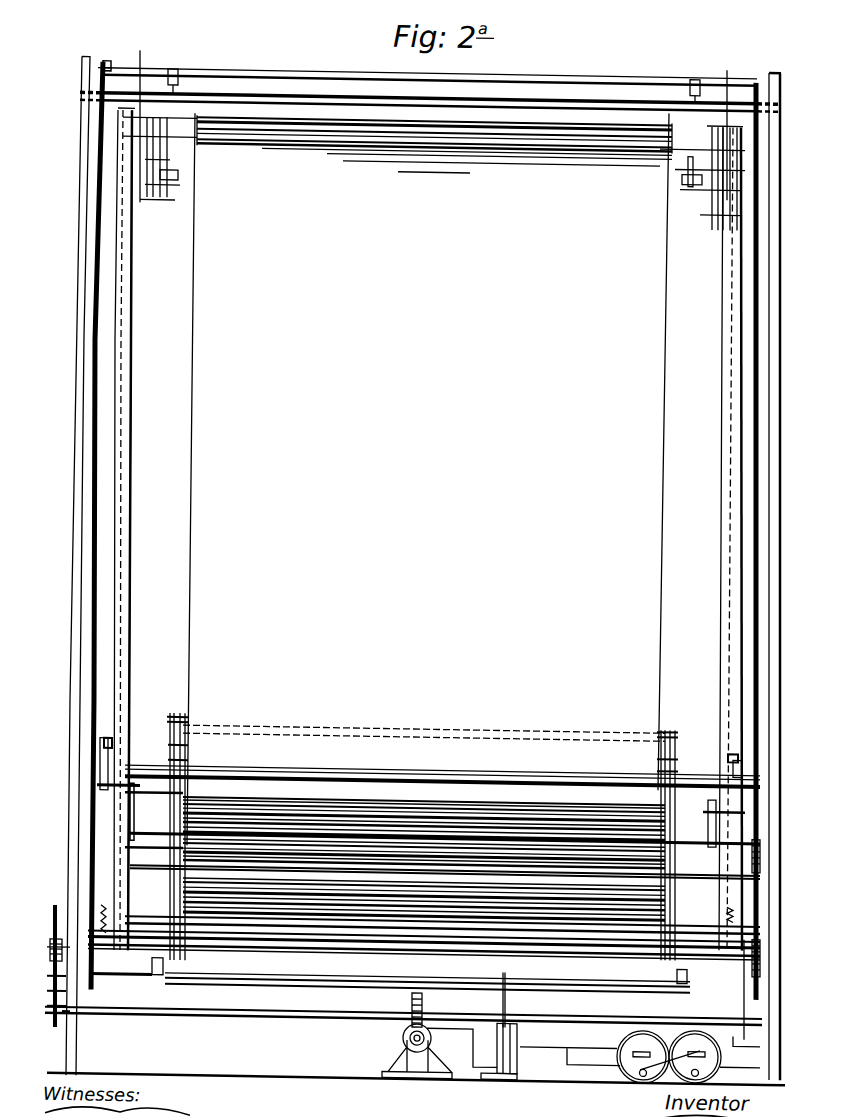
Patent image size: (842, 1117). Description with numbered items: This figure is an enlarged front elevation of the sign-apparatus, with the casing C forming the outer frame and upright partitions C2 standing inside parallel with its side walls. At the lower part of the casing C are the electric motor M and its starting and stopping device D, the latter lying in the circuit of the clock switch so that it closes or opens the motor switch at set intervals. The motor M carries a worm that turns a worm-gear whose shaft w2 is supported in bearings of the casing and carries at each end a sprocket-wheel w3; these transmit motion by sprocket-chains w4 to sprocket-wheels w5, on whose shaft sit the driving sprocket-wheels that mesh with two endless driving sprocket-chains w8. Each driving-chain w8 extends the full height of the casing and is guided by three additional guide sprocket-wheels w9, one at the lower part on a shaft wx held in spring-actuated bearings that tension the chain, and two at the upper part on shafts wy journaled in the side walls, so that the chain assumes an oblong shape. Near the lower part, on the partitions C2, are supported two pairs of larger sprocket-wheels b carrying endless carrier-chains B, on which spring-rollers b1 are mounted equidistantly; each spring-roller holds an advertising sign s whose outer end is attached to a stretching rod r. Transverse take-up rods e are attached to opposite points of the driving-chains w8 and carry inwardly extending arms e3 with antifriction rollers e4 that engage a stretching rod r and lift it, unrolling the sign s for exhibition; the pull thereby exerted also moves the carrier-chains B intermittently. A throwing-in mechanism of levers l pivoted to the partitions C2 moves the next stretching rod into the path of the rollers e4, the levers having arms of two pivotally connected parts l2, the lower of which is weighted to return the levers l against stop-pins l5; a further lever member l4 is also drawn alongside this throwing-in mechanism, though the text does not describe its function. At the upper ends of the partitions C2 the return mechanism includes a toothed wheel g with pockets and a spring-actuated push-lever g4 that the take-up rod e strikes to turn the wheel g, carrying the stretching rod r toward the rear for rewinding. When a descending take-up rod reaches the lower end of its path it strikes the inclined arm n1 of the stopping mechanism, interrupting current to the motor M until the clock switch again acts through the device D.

The casing C is at (80, 345).
The upright partitions C2 is at (133, 350).
The endless driving sprocket-chains w8 is at (98, 298).
The shafts of the upper guide sprocket-wheels wy is at (297, 66).
The warp sheet S is at (428, 479).
The stretching rods r is at (190, 130).
The advertising signs s is at (370, 815).
The shaft of the lower guide sprocket-wheel wx is at (150, 935).
The larger sprocket-wheels b is at (180, 760).
The spring-rollers b1 is at (185, 805).
The endless carrier-chains B is at (168, 828).
The pivotally-connected parts of the lever arms l2 is at (154, 824).
The levers l is at (100, 765).
The stop-pins l5 is at (730, 748).
The lever link l4 is at (130, 790).
The sprocket-wheels w5 is at (58, 964).
The sprocket-chains w4 is at (52, 990).
The sprocket-wheels w3 is at (55, 1008).
The guide sprocket-wheels w9 is at (110, 62).
The push-lever g4 is at (706, 64).
The take-up rods e is at (175, 66).
The disk or wheel g is at (165, 112).
The inwardly extending arms e3 is at (160, 100).
The antifriction rollers e4 is at (164, 962).
The shaft of the worm-gear w2 is at (285, 1018).
The inclined arm n1 is at (506, 971).
The electric motor M is at (430, 1035).
The starting and stopping device D is at (620, 960).